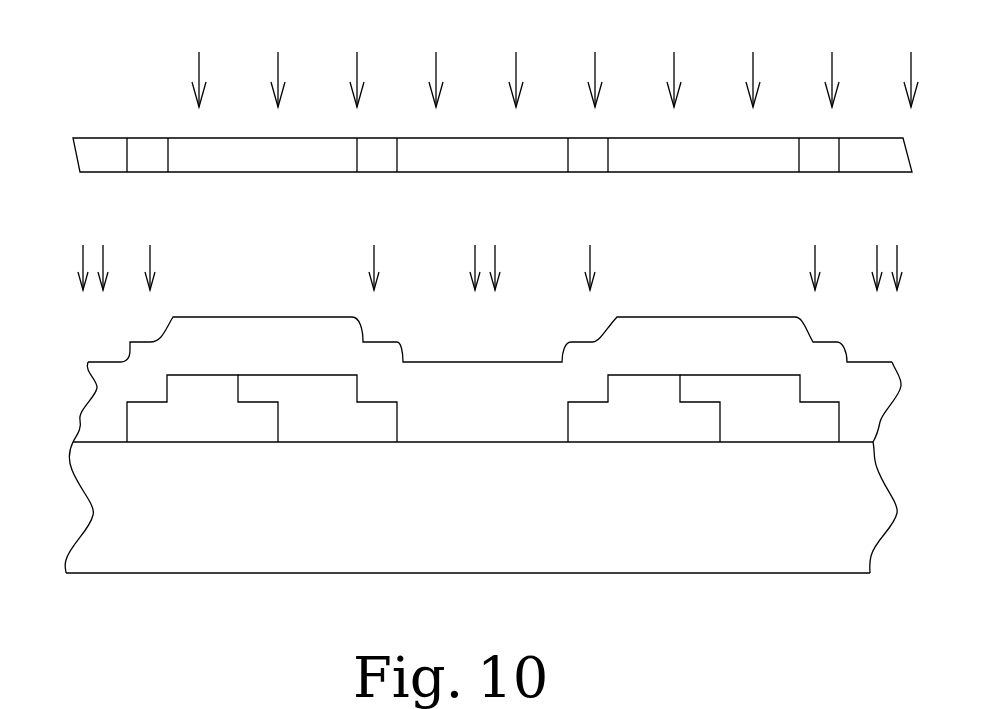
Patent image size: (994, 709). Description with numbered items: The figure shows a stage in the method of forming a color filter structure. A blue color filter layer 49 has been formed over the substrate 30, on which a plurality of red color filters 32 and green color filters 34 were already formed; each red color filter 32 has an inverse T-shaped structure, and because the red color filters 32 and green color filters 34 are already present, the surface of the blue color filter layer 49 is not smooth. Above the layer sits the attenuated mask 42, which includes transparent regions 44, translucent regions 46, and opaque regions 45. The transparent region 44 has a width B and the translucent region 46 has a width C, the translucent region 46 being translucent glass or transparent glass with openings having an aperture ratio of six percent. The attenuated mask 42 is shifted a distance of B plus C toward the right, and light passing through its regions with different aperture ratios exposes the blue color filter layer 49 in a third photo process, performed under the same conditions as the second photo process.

The attenuated mask 42 is at (150, 128).
The transparent region 44 is at (94, 157).
The opaque region 45 is at (269, 157).
The translucent region 46 is at (154, 157).
The blue color filter layer 49 is at (503, 418).
The substrate 30 is at (465, 524).
The red color filter 32 is at (220, 432).
The green color filter 34 is at (342, 432).